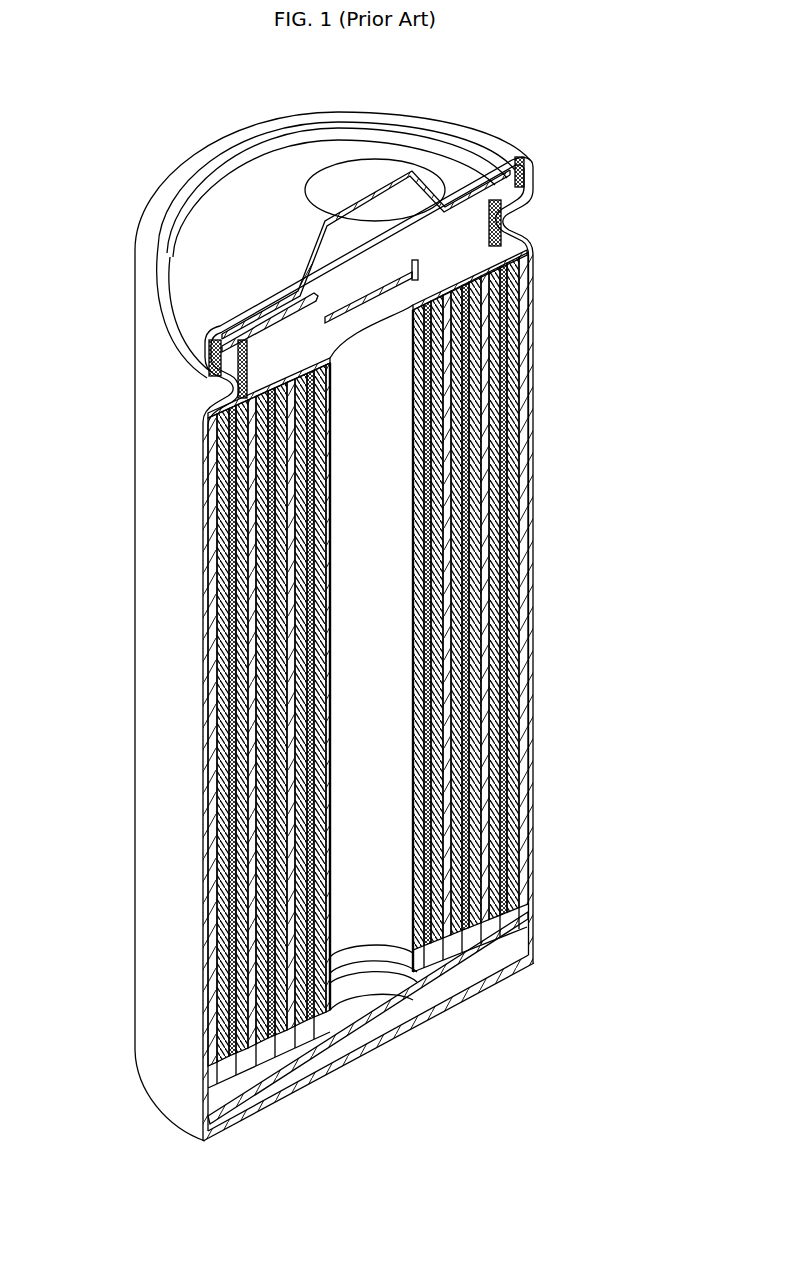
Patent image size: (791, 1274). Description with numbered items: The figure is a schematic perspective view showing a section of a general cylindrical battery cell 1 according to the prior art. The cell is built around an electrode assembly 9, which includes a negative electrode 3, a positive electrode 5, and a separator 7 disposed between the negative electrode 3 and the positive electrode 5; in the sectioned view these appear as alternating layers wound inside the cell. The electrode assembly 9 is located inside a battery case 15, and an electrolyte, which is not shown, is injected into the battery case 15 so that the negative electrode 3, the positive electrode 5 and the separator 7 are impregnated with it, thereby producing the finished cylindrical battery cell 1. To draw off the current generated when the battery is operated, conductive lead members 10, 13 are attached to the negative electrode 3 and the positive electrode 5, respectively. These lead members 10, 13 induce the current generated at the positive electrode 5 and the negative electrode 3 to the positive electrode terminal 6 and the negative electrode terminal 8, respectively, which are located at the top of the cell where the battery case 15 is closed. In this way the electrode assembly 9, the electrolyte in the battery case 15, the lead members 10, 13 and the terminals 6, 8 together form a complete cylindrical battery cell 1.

The cylindrical battery cell 1 is at (181, 100).
The negative electrode 3 is at (608, 398).
The positive electrode 5 is at (512, 404).
The positive electrode terminal 6 is at (357, 173).
The separator 7 is at (510, 470).
The negative electrode terminal 8 is at (153, 272).
The electrode assembly 9 is at (423, 669).
The lead member 10 is at (532, 244).
The lead member 13 is at (487, 922).
The battery case 15 is at (532, 674).